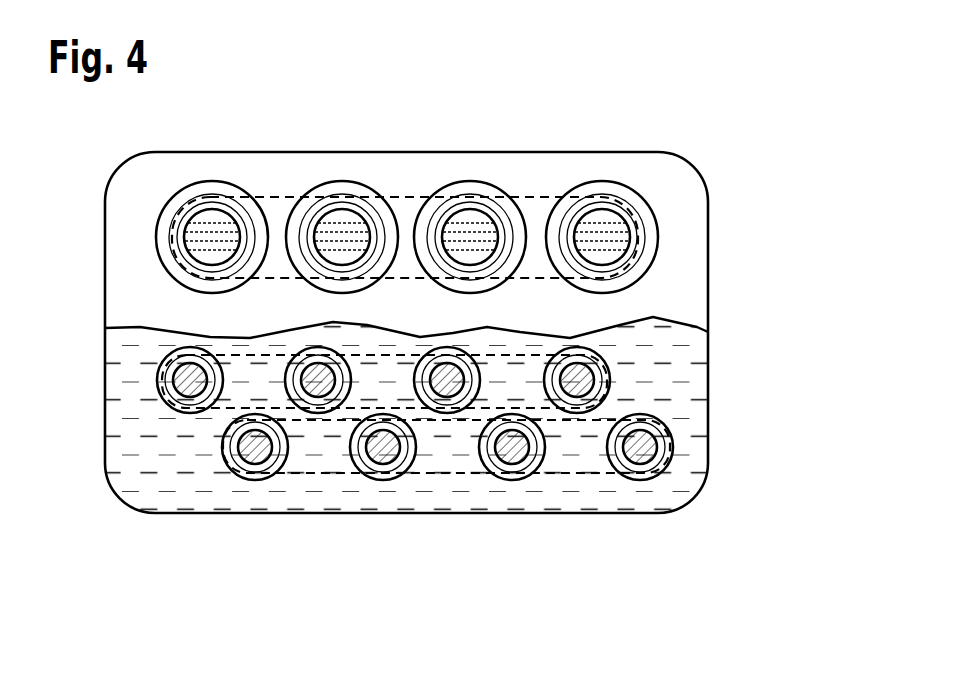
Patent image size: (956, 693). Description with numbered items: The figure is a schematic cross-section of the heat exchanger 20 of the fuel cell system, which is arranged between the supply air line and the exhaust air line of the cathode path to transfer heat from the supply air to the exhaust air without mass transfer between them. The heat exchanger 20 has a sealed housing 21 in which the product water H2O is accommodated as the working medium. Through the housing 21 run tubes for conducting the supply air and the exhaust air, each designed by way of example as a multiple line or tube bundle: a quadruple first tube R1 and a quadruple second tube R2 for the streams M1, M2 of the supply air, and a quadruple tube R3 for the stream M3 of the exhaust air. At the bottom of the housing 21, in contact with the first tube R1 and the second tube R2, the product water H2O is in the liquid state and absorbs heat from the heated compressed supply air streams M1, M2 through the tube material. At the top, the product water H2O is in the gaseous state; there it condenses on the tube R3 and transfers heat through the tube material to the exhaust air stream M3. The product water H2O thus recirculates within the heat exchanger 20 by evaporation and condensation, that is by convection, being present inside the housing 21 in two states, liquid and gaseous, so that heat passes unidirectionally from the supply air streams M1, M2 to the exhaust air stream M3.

The heat exchanger 20 is at (702, 110).
The sealed housing 21 is at (708, 262).
The stream of the supply air M1 is at (193, 394).
The stream of the supply air M2 is at (255, 460).
The stream of the exhaust air M3 is at (212, 238).
The first tube R1 is at (518, 338).
The second tube R2 is at (613, 418).
The tube R3 is at (410, 196).
The product water H2O is at (672, 353).